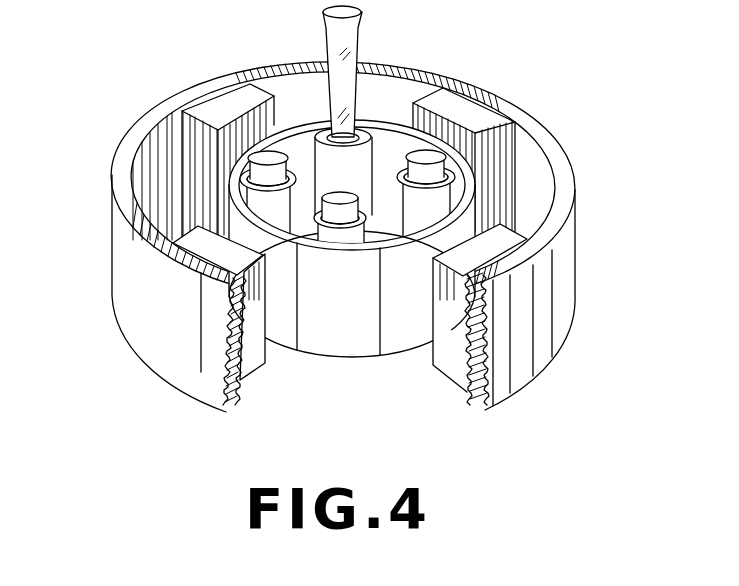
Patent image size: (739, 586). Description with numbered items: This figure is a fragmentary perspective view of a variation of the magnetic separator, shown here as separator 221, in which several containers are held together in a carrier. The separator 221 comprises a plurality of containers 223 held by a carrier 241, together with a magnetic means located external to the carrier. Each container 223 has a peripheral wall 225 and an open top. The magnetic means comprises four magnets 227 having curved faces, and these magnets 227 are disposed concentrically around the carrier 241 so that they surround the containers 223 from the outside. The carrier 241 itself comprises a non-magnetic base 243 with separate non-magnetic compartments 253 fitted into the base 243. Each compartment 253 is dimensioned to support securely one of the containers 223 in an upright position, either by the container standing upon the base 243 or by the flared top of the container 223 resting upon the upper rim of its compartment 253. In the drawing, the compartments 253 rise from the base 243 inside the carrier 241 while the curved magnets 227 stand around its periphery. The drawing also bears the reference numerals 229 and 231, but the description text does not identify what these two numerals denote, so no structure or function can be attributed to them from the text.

The separator 221 is at (576, 155).
The containers 223 is at (357, 47).
The peripheral wall 225 is at (322, 9).
The magnets 227 is at (207, 107).
The pole pieces 229 is at (215, 144).
The cylindrical outer wall 231 is at (580, 286).
The carrier 241 is at (343, 320).
The non-magnetic base 243 is at (367, 362).
The non-magnetic compartments 253 is at (327, 163).